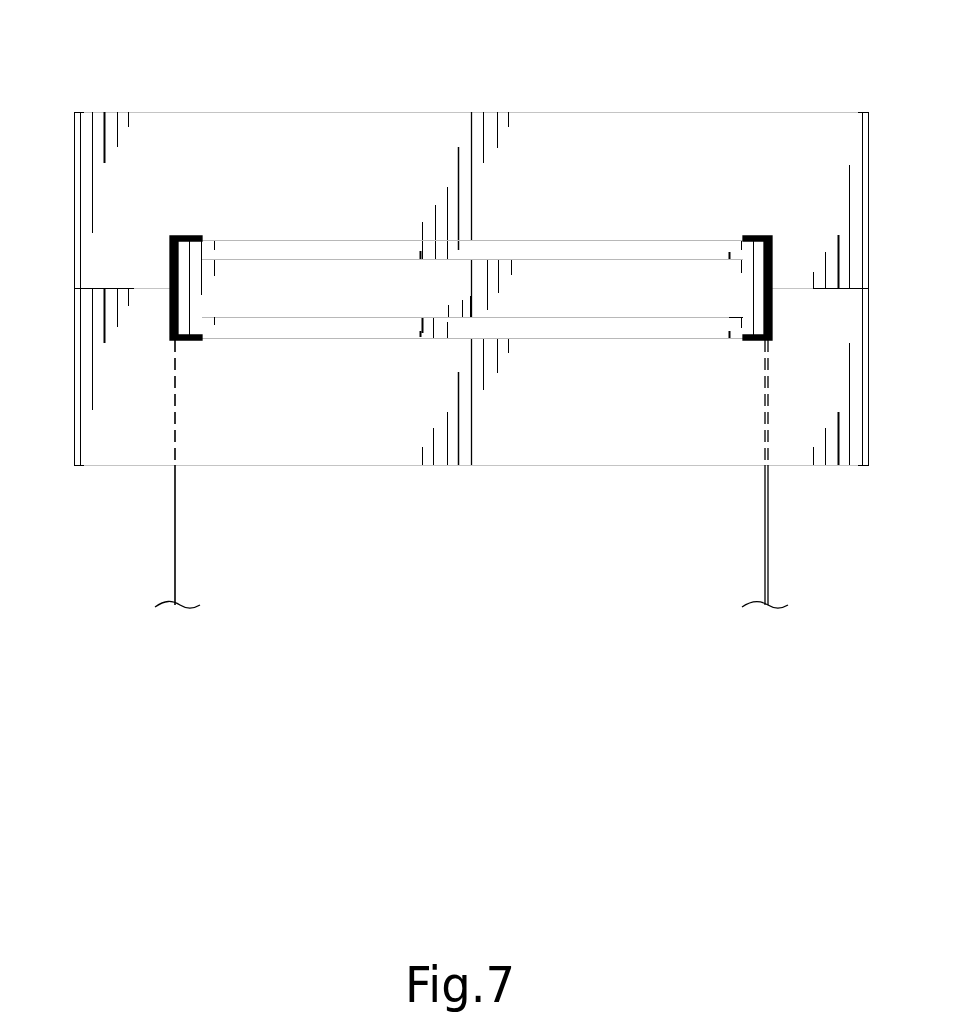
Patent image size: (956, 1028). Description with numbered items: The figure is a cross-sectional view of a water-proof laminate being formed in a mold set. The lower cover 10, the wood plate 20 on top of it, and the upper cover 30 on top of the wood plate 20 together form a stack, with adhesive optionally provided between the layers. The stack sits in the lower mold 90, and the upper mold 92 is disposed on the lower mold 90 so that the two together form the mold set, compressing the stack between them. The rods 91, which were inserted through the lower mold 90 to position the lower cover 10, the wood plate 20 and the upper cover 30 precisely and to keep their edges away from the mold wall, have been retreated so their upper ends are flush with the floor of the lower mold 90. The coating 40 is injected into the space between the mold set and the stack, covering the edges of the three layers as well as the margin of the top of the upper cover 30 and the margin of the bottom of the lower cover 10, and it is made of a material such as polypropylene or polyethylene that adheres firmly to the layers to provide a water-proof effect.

The lower cover 10 is at (341, 334).
The wood plate 20 is at (437, 279).
The upper cover 30 is at (522, 252).
The coating 40 is at (168, 236).
The lower mold 90 is at (452, 447).
The rods 91 is at (175, 518).
The upper mold 92 is at (653, 132).